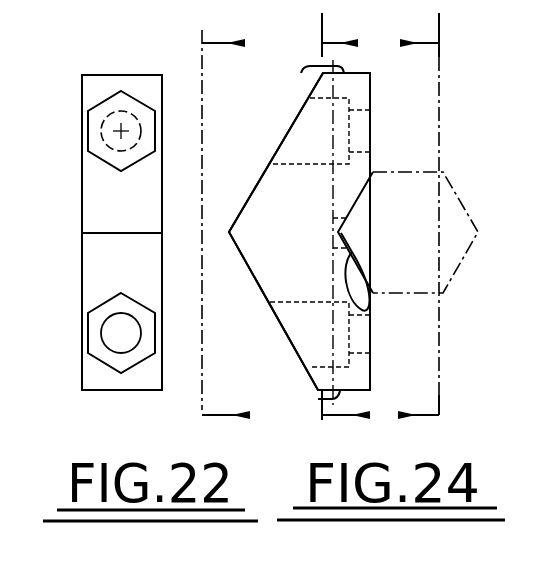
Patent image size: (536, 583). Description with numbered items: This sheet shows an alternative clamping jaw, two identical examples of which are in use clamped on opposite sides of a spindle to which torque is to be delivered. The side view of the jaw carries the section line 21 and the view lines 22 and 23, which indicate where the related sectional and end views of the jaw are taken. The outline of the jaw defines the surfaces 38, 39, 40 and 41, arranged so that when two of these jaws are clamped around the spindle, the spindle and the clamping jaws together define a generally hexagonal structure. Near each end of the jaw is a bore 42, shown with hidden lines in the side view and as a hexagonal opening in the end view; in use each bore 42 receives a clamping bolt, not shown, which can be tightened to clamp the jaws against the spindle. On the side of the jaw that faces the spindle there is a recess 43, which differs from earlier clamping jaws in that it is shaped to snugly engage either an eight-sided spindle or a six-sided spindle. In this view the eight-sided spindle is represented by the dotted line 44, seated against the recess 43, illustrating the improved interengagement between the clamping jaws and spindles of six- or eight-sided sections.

In FIG. 24, the section line 21- 21 is at (365, 232).
In FIG. 24, the view line 22- 22 is at (244, 242).
In FIG. 24, the view line 23 is at (444, 236).
In FIG. 24, the surface 38 is at (300, 74).
In FIG. 24, the surface 39 is at (262, 162).
In FIG. 24, the surface 40 is at (260, 283).
In FIG. 24, the surface 41 is at (318, 399).
In FIG. 22, the bore 42 is at (111, 132).
In FIG. 24, the bore 42 is at (362, 121).
In FIG. 24, the recess 43 is at (370, 312).
In FIG. 24, the eight-sided spindle 44 is at (443, 172).